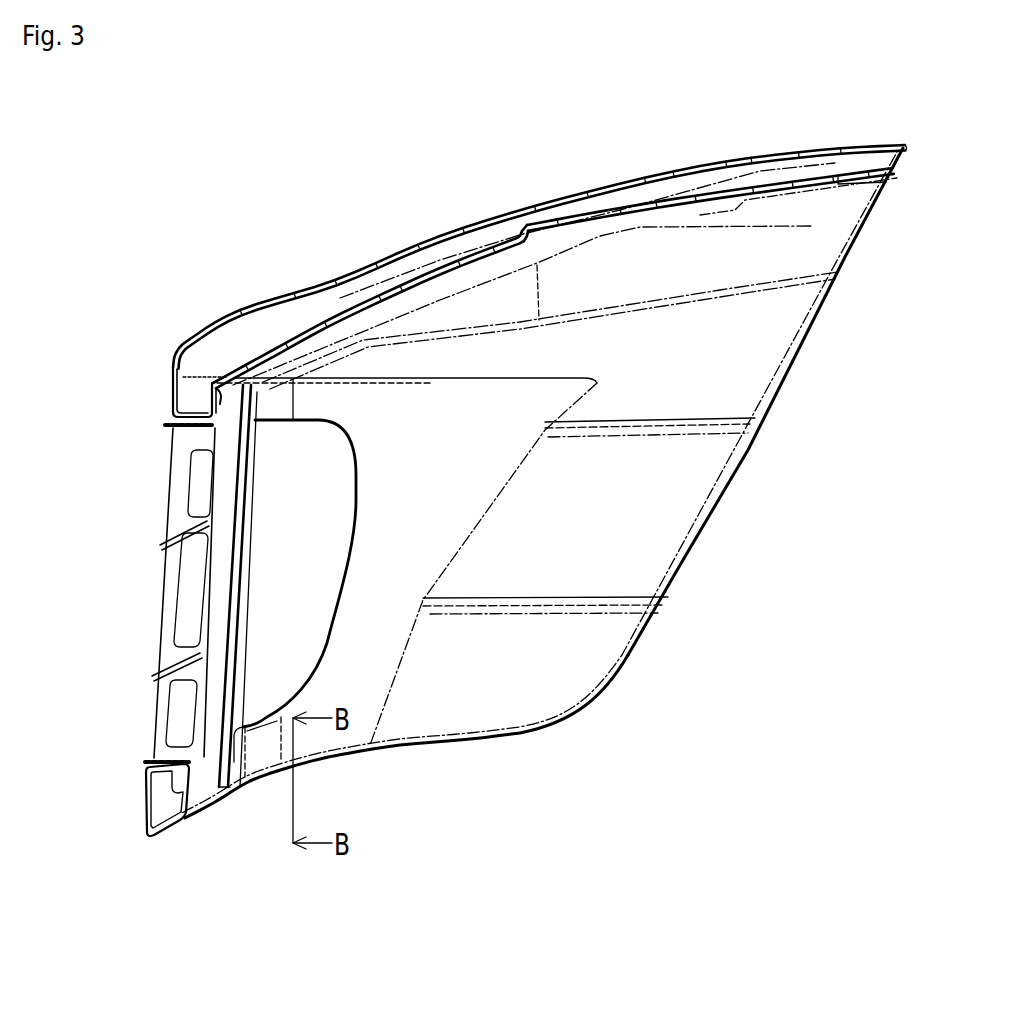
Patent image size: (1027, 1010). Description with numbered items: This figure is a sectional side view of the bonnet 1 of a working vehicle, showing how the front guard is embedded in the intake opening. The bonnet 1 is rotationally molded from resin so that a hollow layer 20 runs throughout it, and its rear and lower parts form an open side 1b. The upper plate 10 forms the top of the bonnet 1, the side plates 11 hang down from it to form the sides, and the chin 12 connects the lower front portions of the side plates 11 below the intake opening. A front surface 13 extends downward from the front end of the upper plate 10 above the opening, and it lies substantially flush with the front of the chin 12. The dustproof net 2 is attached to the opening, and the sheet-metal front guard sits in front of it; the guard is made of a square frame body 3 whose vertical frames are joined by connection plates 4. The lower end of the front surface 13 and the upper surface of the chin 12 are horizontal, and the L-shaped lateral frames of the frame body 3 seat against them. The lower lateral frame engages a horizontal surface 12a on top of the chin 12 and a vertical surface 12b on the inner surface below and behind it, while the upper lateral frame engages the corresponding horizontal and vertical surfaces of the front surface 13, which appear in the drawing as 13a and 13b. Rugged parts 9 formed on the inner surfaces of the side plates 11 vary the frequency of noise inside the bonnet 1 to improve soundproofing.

The bonnet 1 is at (515, 187).
The open side 1b is at (783, 377).
The dustproof net 2 is at (328, 575).
The frame body 3 is at (160, 594).
The connection plates 4 is at (173, 531).
The rugged parts 9 is at (660, 523).
The upper plate 10 is at (383, 251).
The side plates 11 is at (481, 708).
The chin 12 is at (146, 812).
The horizontal surface 12a is at (157, 758).
The vertical surface 12b is at (188, 806).
The front surface 13 is at (172, 397).
The upper channel flange 13a is at (187, 426).
The upper channel hook 13b is at (233, 386).
The hollow layer 20 is at (337, 289).